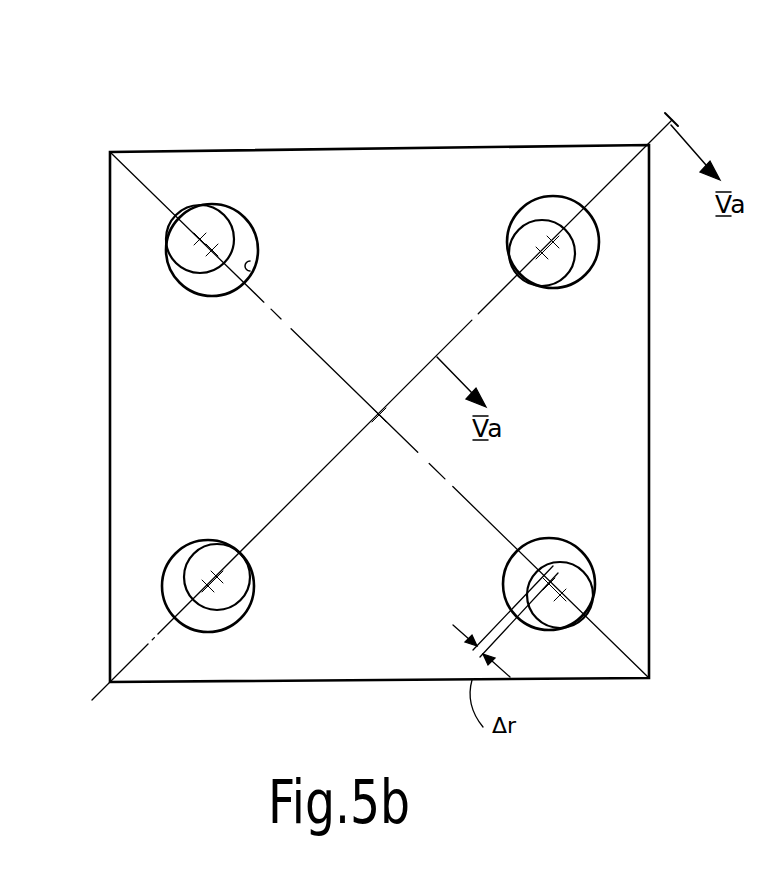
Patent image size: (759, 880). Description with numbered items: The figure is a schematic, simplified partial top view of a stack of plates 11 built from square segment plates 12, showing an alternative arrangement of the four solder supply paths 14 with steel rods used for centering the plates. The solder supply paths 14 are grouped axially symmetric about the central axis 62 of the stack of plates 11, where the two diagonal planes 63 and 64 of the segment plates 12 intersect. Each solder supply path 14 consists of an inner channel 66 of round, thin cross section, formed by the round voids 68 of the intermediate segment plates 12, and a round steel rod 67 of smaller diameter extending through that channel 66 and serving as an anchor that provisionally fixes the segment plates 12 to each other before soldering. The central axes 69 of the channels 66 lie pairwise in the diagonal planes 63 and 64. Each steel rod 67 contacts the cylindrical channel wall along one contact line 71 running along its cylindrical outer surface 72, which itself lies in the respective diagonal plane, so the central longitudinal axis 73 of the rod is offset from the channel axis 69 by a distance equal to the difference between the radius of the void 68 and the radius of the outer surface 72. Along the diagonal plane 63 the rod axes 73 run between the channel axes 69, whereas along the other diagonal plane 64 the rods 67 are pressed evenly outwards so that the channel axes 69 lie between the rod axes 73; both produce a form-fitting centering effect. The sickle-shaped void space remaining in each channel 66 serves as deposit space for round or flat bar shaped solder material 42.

The stack of plates 11 is at (271, 148).
The segment plate 12 is at (565, 655).
The solder supply path 14 is at (190, 542).
The solder material 42 is at (557, 210).
The central axis 62 is at (379, 418).
The diagonal plane 63 is at (448, 340).
The diagonal plane 64 is at (325, 358).
The inner channel 66 is at (210, 283).
The steel rod 67 is at (177, 228).
The round void 68 is at (256, 271).
The central axis of the channel 69 is at (233, 245).
The contact line 71 is at (183, 225).
The cylindrical steel rod outer surface 72 is at (232, 225).
The central longitudinal axis of the tie rod 73 is at (200, 240).